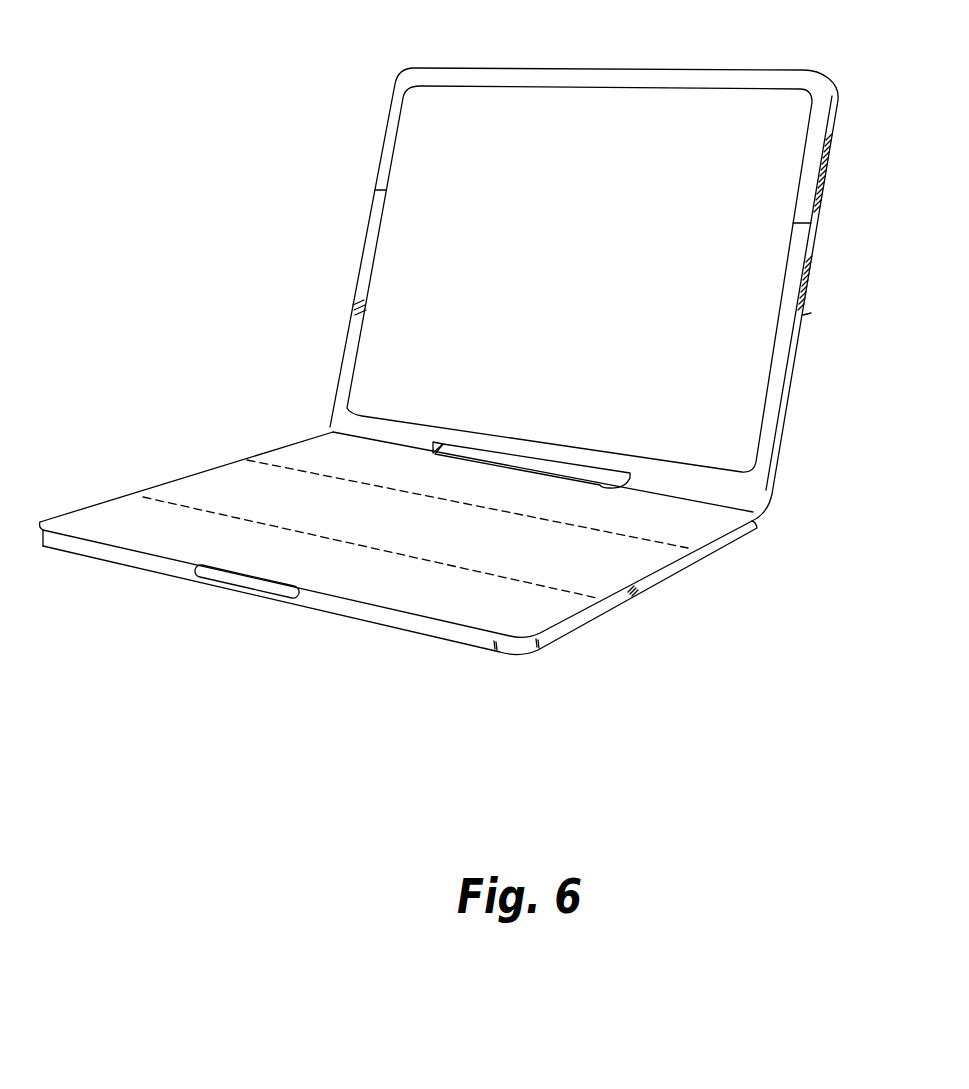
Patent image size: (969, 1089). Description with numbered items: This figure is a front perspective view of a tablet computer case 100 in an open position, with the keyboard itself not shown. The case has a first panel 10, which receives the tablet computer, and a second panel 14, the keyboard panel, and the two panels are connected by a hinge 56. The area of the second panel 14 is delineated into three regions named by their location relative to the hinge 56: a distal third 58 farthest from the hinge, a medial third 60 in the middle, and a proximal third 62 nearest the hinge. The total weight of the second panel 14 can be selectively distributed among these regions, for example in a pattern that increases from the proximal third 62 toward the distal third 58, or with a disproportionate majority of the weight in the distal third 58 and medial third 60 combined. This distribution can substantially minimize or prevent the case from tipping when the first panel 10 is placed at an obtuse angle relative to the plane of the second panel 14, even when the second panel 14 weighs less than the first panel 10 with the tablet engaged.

The first panel 10 is at (794, 89).
The second panel 14 is at (582, 618).
The hinge 56 is at (603, 483).
The distal third 58 is at (177, 542).
The medial third 60 is at (267, 502).
The proximal third 62 is at (359, 471).
The tablet computer case 100 is at (233, 284).